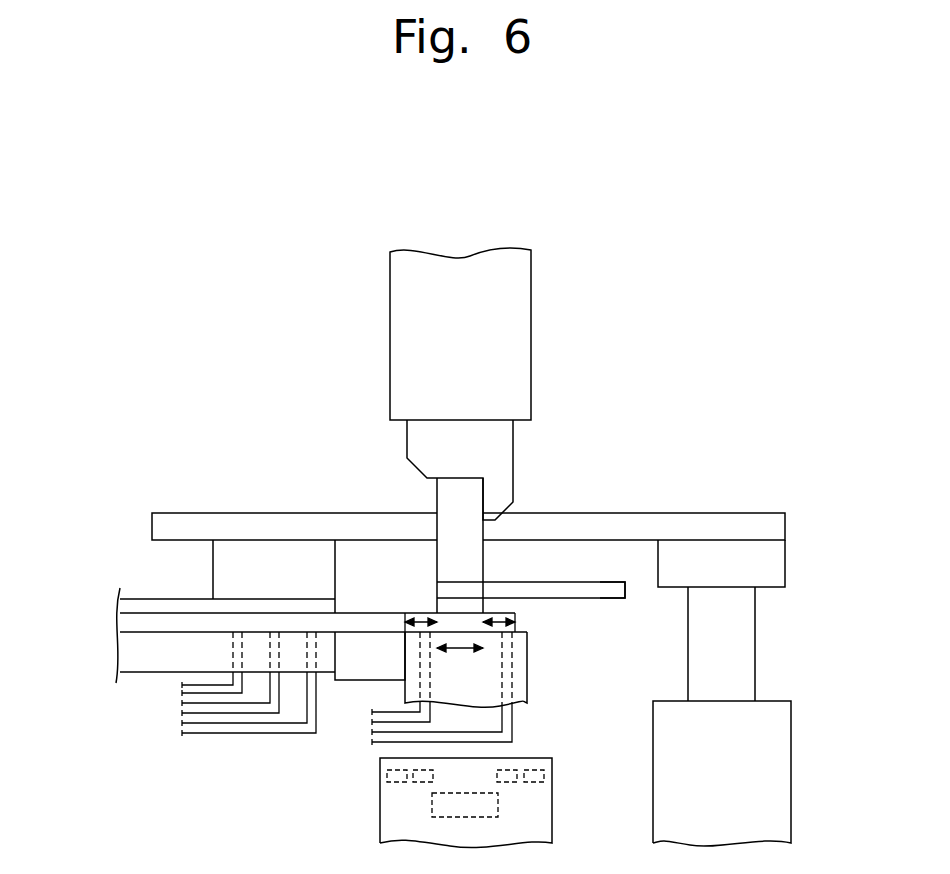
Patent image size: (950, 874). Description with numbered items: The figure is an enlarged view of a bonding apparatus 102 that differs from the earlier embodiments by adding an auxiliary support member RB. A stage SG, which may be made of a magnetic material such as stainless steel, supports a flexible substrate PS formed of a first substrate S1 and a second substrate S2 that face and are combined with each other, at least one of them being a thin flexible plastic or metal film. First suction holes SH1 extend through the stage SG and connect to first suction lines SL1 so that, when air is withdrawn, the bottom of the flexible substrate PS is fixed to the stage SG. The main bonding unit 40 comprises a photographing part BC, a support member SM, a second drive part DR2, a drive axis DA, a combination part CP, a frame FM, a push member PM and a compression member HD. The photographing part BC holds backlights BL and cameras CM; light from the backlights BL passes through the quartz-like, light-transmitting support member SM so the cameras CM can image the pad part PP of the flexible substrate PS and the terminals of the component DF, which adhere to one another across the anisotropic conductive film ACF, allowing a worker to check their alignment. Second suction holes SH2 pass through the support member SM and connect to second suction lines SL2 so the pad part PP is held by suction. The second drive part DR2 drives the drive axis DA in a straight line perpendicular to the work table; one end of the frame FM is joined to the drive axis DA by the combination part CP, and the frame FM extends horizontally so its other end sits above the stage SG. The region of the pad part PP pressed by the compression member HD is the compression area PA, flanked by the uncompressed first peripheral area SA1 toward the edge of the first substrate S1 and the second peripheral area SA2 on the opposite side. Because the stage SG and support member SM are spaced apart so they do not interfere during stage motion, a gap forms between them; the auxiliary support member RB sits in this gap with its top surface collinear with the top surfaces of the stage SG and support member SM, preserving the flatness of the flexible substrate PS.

The bonding apparatus 102 is at (677, 283).
The main bonding unit 40 is at (526, 679).
The frame FM is at (773, 528).
The combination part CP is at (773, 562).
The drive axis DA is at (743, 655).
The second drive part DR2 is at (755, 773).
The compression member HD is at (472, 560).
The push member PM is at (228, 568).
The pad part PP is at (463, 608).
The component DF is at (613, 590).
The anisotropic conductive film ACF is at (447, 606).
The flexible substrate PS is at (272, 631).
The first substrate S1 is at (120, 621).
The second substrate S2 is at (120, 604).
The stage SG is at (118, 652).
The first suction holes SH1 is at (243, 652).
The first suction lines SL1 is at (182, 688).
The auxiliary support member RB is at (358, 640).
The first peripheral area SA1 is at (420, 653).
The second peripheral area SA2 is at (503, 611).
The compression area PA is at (460, 660).
The support member SM is at (527, 687).
The second suction holes SH2 is at (420, 687).
The second suction lines SL2 is at (372, 717).
The photographing part BC is at (411, 803).
The backlights BL is at (380, 775).
The cameras CM is at (432, 805).